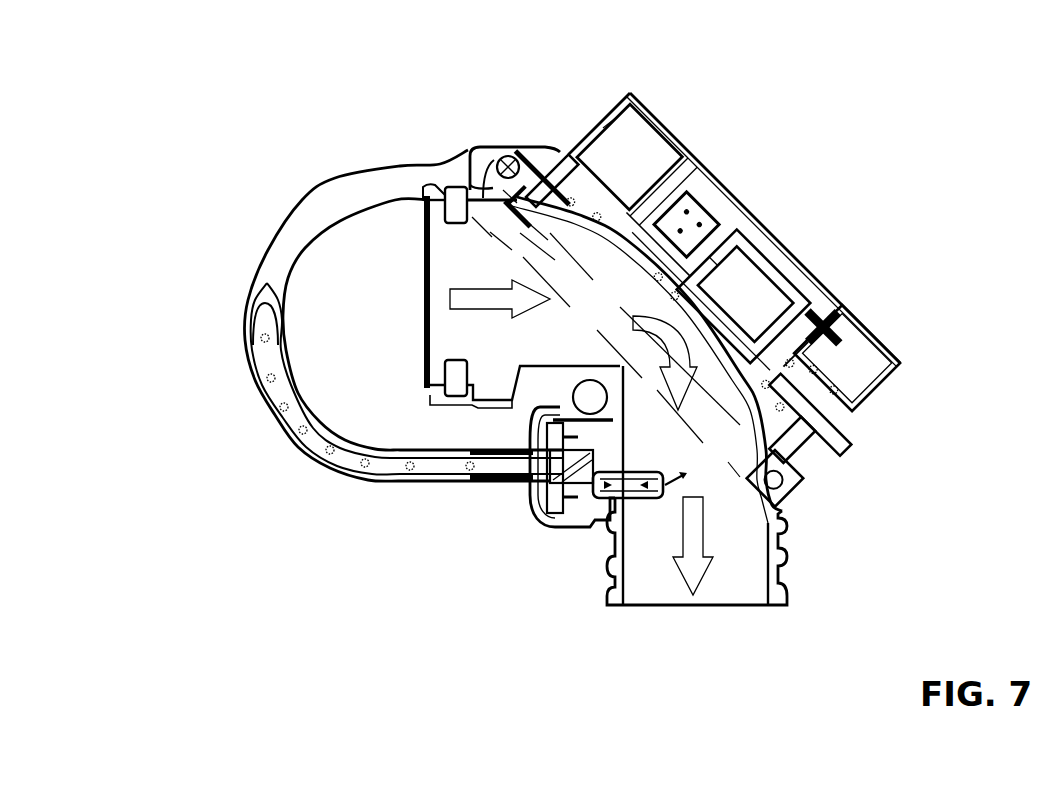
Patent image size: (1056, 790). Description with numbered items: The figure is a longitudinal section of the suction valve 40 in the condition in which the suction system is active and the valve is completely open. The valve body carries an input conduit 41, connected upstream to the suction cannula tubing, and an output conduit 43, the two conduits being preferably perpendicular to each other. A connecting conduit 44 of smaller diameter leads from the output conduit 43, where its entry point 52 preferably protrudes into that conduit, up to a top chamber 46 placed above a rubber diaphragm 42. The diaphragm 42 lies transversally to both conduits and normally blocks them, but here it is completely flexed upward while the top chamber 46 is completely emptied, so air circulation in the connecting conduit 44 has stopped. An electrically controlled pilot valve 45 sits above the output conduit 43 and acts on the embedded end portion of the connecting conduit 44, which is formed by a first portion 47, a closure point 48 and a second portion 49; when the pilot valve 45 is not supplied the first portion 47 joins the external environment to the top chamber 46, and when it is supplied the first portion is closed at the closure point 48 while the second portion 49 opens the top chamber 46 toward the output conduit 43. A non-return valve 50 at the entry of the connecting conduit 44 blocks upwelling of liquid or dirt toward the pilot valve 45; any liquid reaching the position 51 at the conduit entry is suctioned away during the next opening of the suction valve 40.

The suction valve 40 is at (284, 144).
The input conduit 41 is at (453, 248).
The diaphragm 42 is at (482, 145).
The output conduit 43 is at (730, 587).
The connecting conduit 44 is at (272, 260).
The pilot valve 45 is at (744, 296).
The top chamber 46 is at (539, 180).
The first portion of the conduit 47 is at (811, 340).
The closure point 48 is at (847, 358).
The second portion of conduit 49 is at (781, 444).
The non-return valve 50 is at (537, 483).
The position at the entry of the connecting conduit 51 is at (567, 527).
The entry point 52 is at (667, 492).